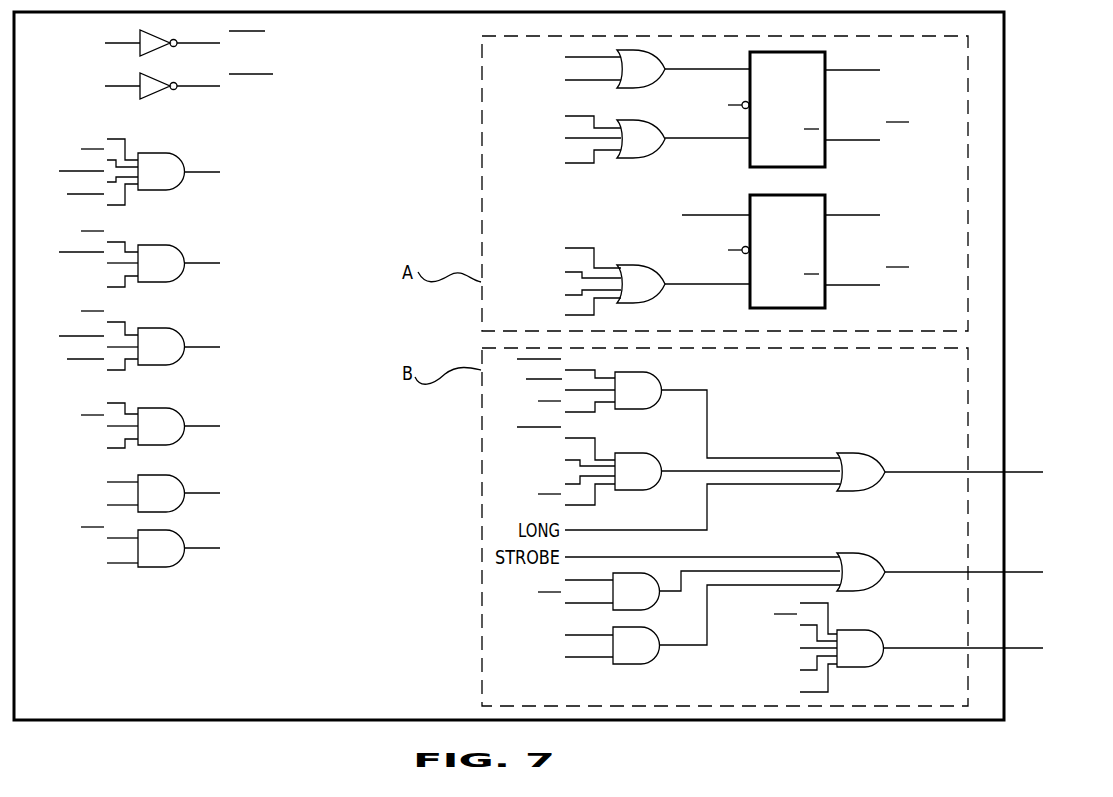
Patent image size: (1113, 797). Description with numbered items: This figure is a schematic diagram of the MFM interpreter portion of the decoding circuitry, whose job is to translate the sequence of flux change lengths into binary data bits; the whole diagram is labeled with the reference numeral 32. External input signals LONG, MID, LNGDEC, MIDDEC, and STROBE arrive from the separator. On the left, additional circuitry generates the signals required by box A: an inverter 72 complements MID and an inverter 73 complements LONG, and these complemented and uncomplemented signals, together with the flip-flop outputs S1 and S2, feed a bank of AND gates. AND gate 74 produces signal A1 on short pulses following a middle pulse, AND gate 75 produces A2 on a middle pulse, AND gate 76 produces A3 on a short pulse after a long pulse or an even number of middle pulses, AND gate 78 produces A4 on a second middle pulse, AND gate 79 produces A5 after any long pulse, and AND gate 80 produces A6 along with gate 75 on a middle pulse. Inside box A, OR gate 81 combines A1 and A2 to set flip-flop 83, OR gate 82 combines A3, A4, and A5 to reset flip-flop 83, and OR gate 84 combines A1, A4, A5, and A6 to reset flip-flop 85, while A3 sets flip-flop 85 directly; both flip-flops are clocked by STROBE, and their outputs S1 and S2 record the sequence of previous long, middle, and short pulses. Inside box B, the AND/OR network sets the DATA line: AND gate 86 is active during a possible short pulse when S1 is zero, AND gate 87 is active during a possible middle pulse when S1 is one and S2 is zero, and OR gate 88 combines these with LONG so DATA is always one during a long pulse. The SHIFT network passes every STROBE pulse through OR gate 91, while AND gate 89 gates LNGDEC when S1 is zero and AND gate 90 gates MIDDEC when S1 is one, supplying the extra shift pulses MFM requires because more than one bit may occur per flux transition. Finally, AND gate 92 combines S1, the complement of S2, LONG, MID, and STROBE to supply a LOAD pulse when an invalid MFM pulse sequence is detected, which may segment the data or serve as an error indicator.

The control logic circuit 32 is at (254, 653).
The inverter 72 is at (165, 36).
The inverter 73 is at (165, 79).
The AND gate 74 is at (170, 153).
The AND gate 75 is at (170, 245).
The AND gate 76 is at (168, 328).
The AND gate 78 is at (168, 408).
The AND gate 79 is at (168, 475).
The AND gate 80 is at (165, 530).
The OR gate 81 is at (660, 61).
The OR gate 82 is at (650, 155).
The flip-flop 83 is at (826, 100).
The OR gate 84 is at (655, 300).
The flip-flop 85 is at (826, 244).
The AND gate 86 is at (654, 405).
The AND gate 87 is at (654, 487).
The OR gate 88 is at (874, 485).
The AND gate 89 is at (653, 606).
The AND gate 90 is at (653, 660).
The OR gate 91 is at (870, 555).
The AND gate 92 is at (880, 661).